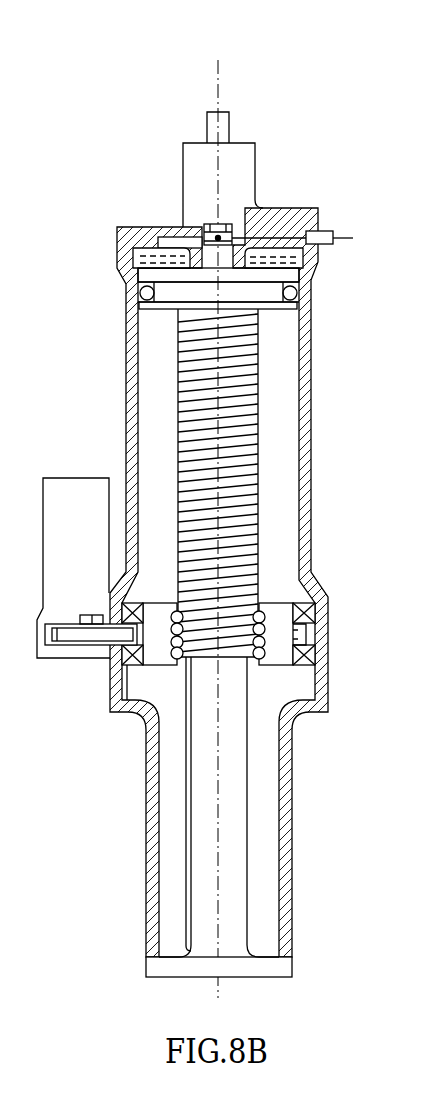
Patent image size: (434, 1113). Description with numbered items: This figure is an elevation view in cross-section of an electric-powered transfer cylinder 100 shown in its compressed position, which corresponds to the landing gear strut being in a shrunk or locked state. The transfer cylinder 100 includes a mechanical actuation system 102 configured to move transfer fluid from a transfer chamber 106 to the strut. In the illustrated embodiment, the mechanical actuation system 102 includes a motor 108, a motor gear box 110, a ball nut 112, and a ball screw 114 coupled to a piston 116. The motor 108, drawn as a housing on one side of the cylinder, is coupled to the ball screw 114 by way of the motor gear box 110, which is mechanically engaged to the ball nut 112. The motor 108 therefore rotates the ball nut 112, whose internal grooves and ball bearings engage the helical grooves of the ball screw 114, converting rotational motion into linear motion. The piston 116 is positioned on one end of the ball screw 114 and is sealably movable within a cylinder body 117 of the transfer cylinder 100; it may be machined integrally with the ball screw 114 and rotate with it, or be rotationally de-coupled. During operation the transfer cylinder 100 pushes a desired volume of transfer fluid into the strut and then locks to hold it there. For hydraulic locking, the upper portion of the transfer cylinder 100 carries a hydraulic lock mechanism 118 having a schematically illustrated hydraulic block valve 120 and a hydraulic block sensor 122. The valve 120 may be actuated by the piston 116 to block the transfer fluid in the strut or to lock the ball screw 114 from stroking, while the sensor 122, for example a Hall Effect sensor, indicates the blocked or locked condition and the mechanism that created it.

The transfer cylinder 100 is at (116, 127).
The mechanical actuation system 102 is at (172, 762).
The transfer chamber 106 is at (150, 256).
The motor 108 is at (78, 478).
The motor gear box 110 is at (77, 648).
The ball nut 112 is at (158, 652).
The ball screw 114 is at (262, 358).
The piston 116 is at (278, 310).
The cylinder body 117 is at (312, 292).
The hydraulic lock mechanism 118 is at (270, 182).
The hydraulic block valve 120 is at (210, 243).
The hydraulic block sensor 122 is at (229, 122).